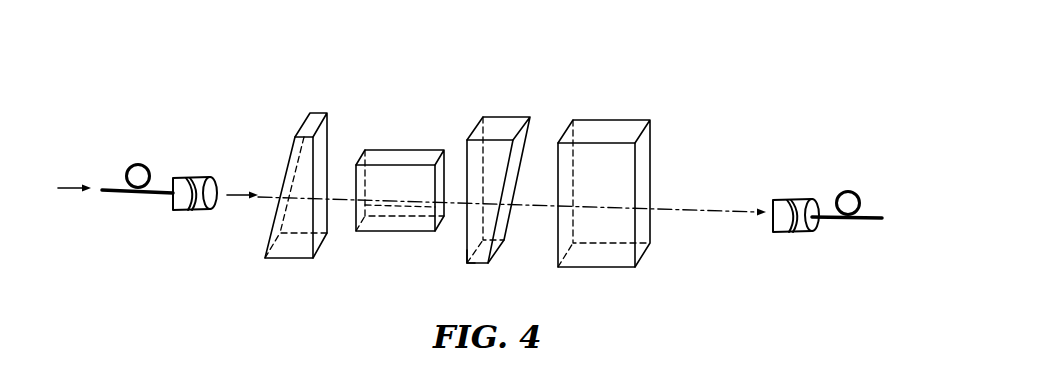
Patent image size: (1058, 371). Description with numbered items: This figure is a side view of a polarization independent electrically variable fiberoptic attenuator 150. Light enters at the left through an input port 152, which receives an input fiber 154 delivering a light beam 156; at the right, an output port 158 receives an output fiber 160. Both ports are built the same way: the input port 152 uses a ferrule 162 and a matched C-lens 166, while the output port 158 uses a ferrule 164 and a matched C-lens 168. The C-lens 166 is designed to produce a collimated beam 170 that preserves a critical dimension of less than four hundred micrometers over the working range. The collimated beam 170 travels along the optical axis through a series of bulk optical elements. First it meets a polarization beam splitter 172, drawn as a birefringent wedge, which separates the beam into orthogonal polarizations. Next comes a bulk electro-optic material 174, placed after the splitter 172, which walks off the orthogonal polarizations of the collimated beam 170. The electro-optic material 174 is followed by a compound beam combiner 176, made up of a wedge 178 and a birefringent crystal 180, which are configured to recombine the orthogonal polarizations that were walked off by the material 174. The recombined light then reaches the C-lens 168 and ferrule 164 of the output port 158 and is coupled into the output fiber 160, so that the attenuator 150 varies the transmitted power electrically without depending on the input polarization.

The polarization independent electrically variable fiberoptic attenuator 150 is at (716, 39).
The input port 152 is at (181, 118).
The input fiber 154 is at (123, 194).
The light beam 156 is at (62, 185).
The output port 158 is at (796, 150).
The output fiber 160 is at (867, 220).
The ferrule 162 is at (172, 213).
The ferrule 164 is at (812, 231).
The C-lens 166 is at (215, 213).
The C-lens 168 is at (770, 228).
The collimated beam 170 is at (237, 186).
The polarization beam splitter 172 is at (318, 112).
The bulk electro-optic material 174 is at (397, 148).
The compound beam combiner 176 is at (538, 76).
The wedge 178 is at (463, 247).
The birefringent crystal 180 is at (607, 118).